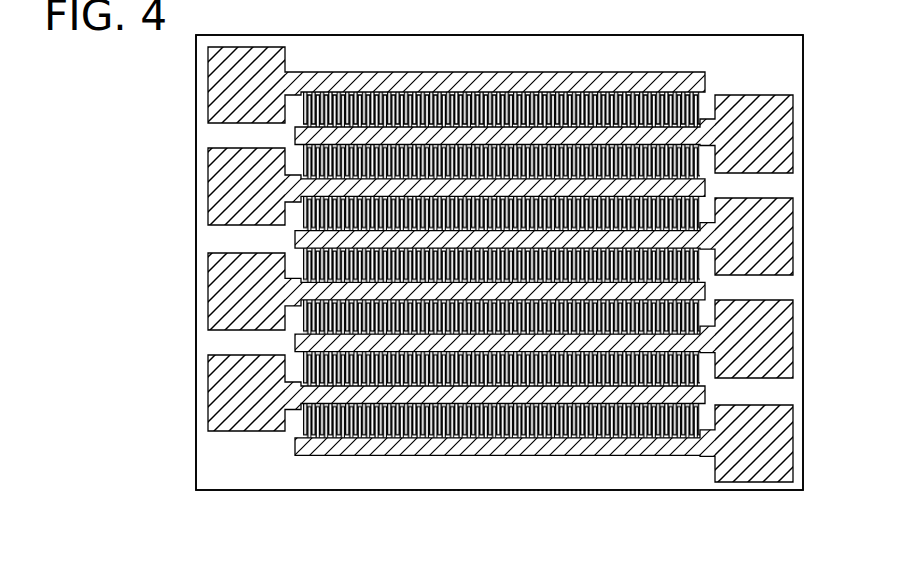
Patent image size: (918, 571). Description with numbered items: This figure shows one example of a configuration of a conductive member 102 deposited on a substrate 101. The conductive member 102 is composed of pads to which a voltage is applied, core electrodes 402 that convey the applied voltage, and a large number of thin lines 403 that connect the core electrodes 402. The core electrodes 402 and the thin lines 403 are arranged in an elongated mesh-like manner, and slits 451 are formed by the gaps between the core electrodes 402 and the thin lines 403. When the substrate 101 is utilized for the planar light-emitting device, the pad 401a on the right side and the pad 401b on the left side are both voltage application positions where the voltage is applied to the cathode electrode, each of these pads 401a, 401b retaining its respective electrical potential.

The substrate 101 is at (538, 482).
The conductive member 102 is at (399, 474).
The pad 401a is at (752, 458).
The pad 401b is at (240, 418).
The core electrode 402 is at (287, 403).
The thin line 403 is at (597, 423).
The slit 451 is at (500, 308).